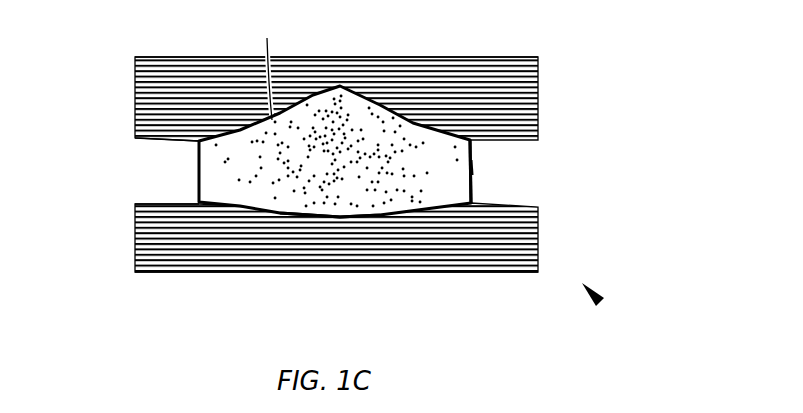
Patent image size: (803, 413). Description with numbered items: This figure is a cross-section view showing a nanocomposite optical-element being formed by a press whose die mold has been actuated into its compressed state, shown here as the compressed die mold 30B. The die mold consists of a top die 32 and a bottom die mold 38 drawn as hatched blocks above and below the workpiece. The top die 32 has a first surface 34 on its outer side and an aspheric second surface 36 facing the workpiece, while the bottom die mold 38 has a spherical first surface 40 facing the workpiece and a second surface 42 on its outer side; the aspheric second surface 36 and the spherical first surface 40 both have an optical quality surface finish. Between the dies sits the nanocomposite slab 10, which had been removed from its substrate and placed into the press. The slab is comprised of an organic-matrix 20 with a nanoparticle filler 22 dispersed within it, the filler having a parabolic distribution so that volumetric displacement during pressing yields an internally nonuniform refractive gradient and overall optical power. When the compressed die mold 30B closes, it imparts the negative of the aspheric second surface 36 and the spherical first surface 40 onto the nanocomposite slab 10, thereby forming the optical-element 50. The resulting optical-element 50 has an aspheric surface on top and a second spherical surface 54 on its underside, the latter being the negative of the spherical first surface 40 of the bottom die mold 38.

The nanocomposite slab 10 is at (181, 167).
The organic-matrix 20 is at (456, 160).
The nanoparticle filler 22 is at (462, 160).
The compressed die mold 30B is at (600, 302).
The top die 32 is at (553, 72).
The first surface 34 is at (168, 58).
The aspheric second surface 36 is at (158, 137).
The bottom die mold 38 is at (553, 241).
The spherical first surface 40 is at (157, 204).
The second surface 42 is at (150, 272).
The optical-element 50 is at (331, 151).
The second spherical surface 54 is at (382, 218).